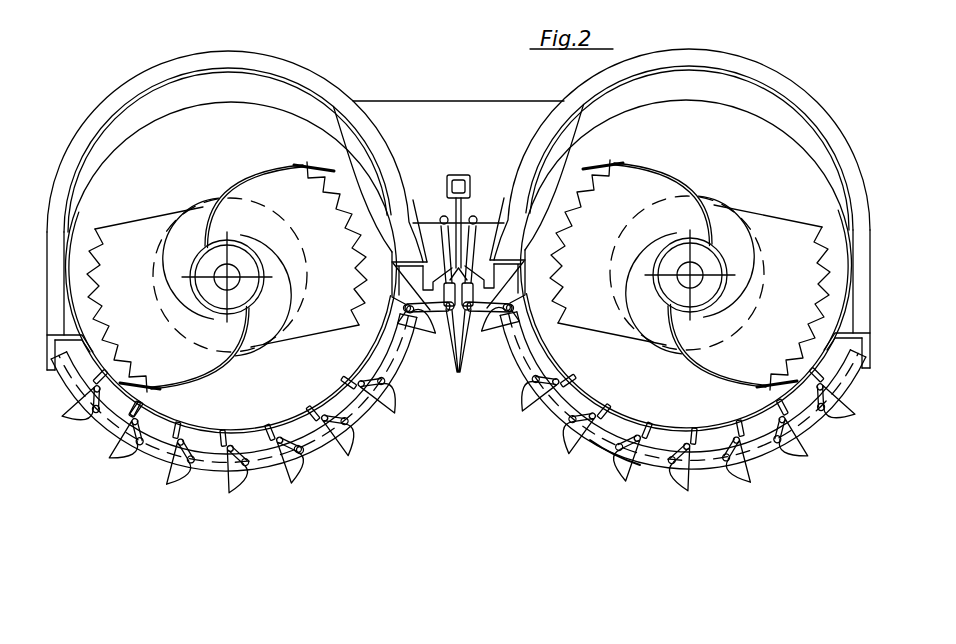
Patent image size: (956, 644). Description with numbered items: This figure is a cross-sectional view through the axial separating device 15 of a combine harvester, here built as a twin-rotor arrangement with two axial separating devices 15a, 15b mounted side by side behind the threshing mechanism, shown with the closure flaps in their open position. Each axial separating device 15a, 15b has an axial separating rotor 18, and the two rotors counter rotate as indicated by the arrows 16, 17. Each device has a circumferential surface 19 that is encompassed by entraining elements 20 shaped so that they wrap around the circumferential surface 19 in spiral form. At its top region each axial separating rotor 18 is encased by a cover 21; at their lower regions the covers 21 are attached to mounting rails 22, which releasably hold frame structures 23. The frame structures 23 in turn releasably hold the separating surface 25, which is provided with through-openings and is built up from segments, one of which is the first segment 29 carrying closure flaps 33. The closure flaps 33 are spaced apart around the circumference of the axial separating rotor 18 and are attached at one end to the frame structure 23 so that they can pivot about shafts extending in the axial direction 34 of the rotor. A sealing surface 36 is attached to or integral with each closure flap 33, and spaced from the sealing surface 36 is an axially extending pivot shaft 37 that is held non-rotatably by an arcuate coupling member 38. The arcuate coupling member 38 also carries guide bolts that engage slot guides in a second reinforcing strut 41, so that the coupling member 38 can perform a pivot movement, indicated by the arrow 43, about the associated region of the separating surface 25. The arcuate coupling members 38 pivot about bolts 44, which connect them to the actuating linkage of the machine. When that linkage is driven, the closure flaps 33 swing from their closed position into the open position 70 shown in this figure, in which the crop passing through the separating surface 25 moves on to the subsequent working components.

The axial separating device 15 is at (373, 96).
The axial separating device 15a is at (189, 52).
The axial separating device 15b is at (700, 50).
The arrow 16 is at (331, 295).
The arrow 17 is at (583, 288).
The axial separating rotor 18 is at (202, 212).
The circumferential surface 19 is at (207, 200).
The entraining element 20 is at (120, 233).
The cover 21 is at (152, 88).
The housing side wall 22 is at (50, 307).
The frame structure 23 is at (75, 343).
The separating surface 25 is at (245, 425).
The first segment 29 is at (268, 478).
The closure flap 33 is at (118, 470).
The axial direction 34 is at (222, 283).
The sealing surface 36 is at (229, 490).
The pivot shaft 37 is at (303, 454).
The arcuate coupling member 38 is at (97, 432).
The second reinforcing strut 41 is at (612, 425).
The arrow 43 is at (752, 497).
The bolt 44 is at (457, 373).
The open position 70 is at (418, 488).